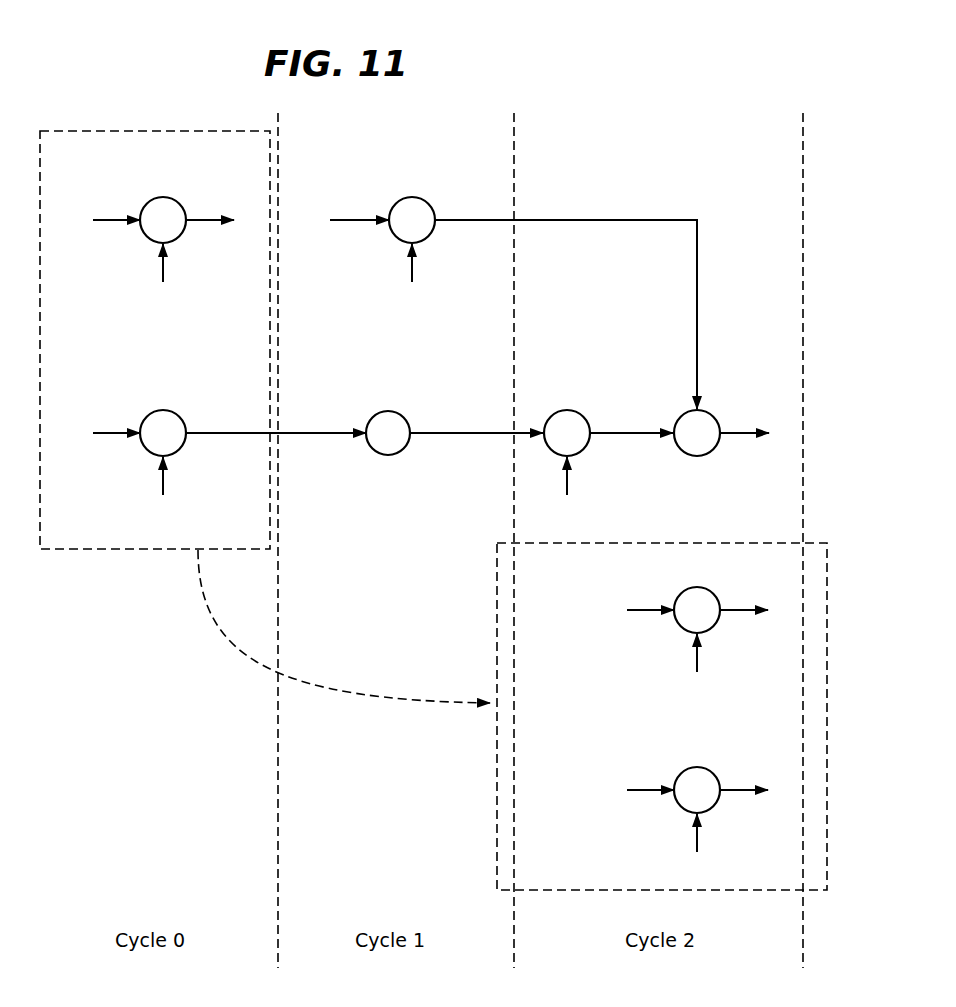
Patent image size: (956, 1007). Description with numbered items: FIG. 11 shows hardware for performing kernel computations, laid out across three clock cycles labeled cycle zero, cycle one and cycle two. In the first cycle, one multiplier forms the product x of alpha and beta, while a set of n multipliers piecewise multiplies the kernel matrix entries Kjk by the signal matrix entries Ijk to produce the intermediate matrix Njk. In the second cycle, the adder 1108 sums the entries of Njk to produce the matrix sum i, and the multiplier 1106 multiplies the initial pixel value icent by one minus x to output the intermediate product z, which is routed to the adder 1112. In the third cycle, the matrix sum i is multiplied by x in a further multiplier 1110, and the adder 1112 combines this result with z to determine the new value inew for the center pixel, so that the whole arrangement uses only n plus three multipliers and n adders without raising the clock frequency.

The multiplier 1106 is at (428, 204).
The adder 1108 is at (395, 455).
The multiplier (i times x) 1110 is at (588, 412).
The adder 1112 is at (709, 453).